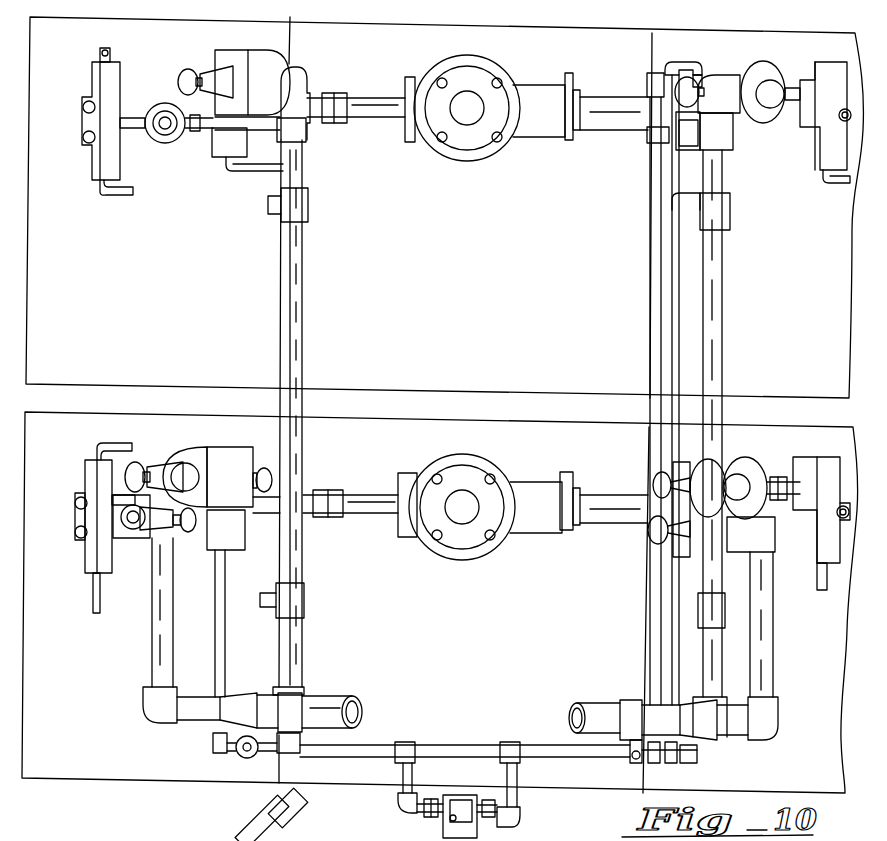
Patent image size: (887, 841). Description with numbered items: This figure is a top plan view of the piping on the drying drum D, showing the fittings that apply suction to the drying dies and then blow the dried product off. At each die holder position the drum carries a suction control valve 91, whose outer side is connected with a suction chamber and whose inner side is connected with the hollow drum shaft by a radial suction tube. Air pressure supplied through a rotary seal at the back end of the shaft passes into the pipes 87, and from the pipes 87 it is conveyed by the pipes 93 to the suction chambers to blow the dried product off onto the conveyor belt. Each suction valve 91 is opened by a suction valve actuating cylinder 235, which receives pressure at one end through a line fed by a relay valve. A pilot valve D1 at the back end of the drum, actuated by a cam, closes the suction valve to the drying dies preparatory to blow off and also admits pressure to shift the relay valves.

The pipes 87 is at (333, 695).
The suction control valve 91 is at (465, 162).
The pipes 93 is at (377, 96).
The suction valve actuating cylinder 235 is at (610, 97).
The drying drum D is at (80, 793).
The pilot valve D1 is at (440, 830).